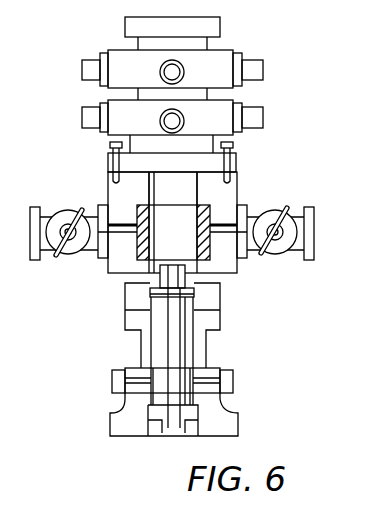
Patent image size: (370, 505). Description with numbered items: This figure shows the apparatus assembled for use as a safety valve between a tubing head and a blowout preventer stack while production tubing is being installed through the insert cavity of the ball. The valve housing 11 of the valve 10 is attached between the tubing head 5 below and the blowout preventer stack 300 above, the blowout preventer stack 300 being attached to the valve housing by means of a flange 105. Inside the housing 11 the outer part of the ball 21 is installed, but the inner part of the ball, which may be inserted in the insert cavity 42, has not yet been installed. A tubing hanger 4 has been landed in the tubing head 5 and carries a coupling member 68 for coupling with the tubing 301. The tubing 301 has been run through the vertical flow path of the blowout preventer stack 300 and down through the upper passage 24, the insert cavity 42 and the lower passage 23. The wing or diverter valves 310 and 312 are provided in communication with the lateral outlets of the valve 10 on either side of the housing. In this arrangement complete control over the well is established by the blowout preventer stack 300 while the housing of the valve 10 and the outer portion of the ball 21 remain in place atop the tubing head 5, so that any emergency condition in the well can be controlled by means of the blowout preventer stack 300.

The blowout preventer stack 300 is at (273, 23).
The flange 105 is at (205, 162).
The valve 10 is at (220, 212).
The valve housing 11 is at (222, 188).
The outer part of the ball 21 is at (207, 218).
The upper passage 24 is at (173, 188).
The insert cavity 42 is at (171, 234).
The wing or diverter valve 312 is at (62, 210).
The wing or diverter valve 310 is at (285, 250).
The lower passage 23 is at (192, 272).
The coupling member 68 is at (150, 271).
The tubing hanger 4 is at (165, 330).
The tubing head 5 is at (190, 398).
The tubing 301 is at (160, 426).